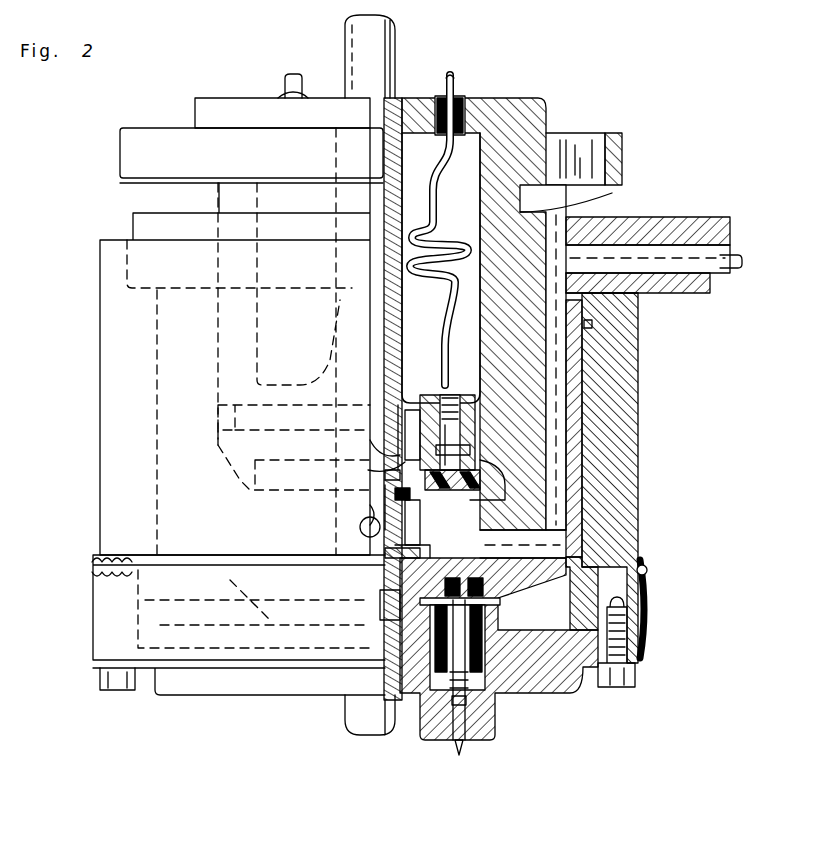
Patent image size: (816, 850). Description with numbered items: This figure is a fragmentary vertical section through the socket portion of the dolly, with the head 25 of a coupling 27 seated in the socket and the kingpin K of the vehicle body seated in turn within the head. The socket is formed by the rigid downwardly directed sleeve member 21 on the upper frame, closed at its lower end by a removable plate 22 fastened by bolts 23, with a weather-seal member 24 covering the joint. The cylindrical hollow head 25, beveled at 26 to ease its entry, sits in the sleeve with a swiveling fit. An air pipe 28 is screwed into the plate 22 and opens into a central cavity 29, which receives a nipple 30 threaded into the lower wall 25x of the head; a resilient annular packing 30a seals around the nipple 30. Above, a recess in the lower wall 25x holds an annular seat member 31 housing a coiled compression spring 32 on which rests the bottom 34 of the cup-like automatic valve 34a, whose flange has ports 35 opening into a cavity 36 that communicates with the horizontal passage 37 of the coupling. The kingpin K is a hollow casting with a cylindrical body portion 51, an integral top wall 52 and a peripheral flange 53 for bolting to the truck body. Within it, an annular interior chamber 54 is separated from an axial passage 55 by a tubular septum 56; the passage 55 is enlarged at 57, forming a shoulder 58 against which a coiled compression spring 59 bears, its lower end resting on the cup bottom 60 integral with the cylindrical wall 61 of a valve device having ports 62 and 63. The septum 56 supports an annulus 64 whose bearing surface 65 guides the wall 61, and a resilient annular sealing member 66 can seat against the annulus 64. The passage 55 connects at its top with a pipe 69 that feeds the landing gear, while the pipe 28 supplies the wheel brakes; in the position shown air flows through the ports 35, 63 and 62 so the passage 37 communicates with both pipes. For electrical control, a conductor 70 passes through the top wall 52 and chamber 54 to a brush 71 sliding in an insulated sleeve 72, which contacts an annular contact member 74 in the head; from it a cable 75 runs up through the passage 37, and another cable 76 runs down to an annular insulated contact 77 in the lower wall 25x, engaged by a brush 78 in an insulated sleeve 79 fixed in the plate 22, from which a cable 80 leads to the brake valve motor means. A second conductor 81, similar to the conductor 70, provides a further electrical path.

The sleeve member 21 is at (618, 390).
The removable plate 22 is at (547, 695).
The bolts 23 is at (632, 675).
The weather-seal member 24 is at (648, 603).
The head of coupling 25 is at (573, 360).
The lower wall of head 25x is at (590, 640).
The bevel 26 is at (536, 628).
The coupling 27 is at (662, 200).
The air pipe 28 is at (345, 722).
The central cavity 29 is at (408, 700).
The nipple 30 is at (345, 648).
The resilient annular packing 30a is at (415, 630).
The annular seat member 31 is at (410, 552).
The coiled compression spring 32 is at (385, 552).
The bottom of valve 34 is at (368, 510).
The automatic valve 34a is at (360, 530).
The ports 35 is at (412, 535).
The cavity 36 is at (570, 533).
The horizontal passage 37 is at (700, 252).
The cylindrical body portion 51 is at (575, 200).
The top wall 52 is at (490, 115).
The peripheral flange 53 is at (610, 140).
The annular interior chamber 54 is at (420, 150).
The axial passage 55 is at (388, 132).
The tubular septum 56 is at (398, 198).
The enlarged chamber 57 is at (418, 385).
The horizontal shoulder 58 is at (410, 420).
The coiled compression spring 59 is at (400, 430).
The cup bottom 60 is at (372, 450).
The cylindrical wall of valve 61 is at (368, 470).
The upper port 62 is at (408, 437).
The lower port 63 is at (389, 500).
The annulus 64 is at (372, 462).
The cylindrical bearing surface 65 is at (370, 478).
The resilient annular sealing member 66 is at (428, 395).
The pipe 69 is at (390, 45).
The electrical conductor 70 is at (456, 80).
The brush 71 is at (450, 452).
The insulated sleeve 72 is at (478, 365).
The annular contact member 74 is at (471, 480).
The cable 75 is at (725, 268).
The cable 76 is at (450, 550).
The annular insulated contact 77 is at (380, 598).
The brush 78 is at (470, 735).
The insulated sleeve 79 is at (410, 680).
The cable 80 is at (457, 758).
The electrical conductor 81 is at (290, 82).
The kingpin K is at (562, 78).